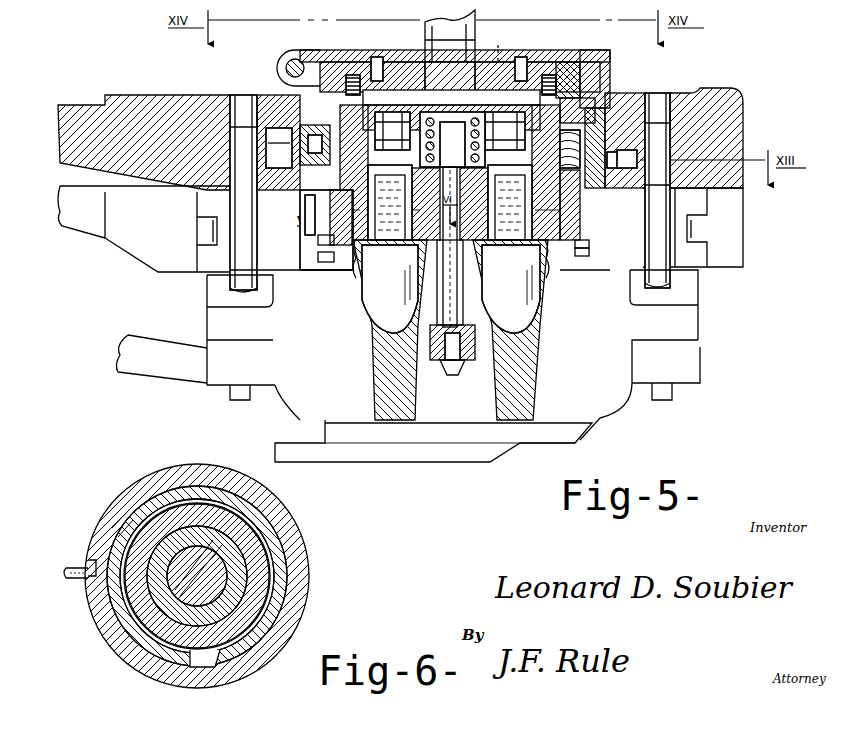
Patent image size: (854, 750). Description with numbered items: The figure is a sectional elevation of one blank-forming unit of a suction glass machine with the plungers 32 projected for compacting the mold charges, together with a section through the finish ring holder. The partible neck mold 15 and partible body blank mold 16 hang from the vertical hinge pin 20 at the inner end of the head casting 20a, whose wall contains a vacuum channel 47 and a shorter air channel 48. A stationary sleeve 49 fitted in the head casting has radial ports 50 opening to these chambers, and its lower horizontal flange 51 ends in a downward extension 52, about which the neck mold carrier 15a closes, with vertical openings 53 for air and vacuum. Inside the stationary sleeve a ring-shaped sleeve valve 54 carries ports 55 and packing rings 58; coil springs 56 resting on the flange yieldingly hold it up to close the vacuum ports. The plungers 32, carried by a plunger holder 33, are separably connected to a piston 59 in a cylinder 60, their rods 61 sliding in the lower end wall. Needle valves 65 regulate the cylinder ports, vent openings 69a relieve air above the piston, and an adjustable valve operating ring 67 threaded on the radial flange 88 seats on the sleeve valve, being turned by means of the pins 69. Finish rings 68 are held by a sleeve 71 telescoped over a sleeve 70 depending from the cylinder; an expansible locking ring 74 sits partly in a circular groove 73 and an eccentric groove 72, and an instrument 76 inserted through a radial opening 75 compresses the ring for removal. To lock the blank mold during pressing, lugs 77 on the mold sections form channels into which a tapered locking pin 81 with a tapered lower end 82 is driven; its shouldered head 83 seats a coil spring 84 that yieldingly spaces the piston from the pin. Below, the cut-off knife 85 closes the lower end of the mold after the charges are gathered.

In FIG. 5, the partible neck mold 15 is at (572, 265).
In FIG. 5, the neck mold carrier 15a is at (700, 252).
In FIG. 5, the partible body blank mold 16 is at (675, 320).
In FIG. 5, the vertical hinge pin 20 is at (144, 142).
In FIG. 5, the head casting 20a is at (745, 118).
In FIG. 5, the plungers 32 is at (450, 330).
In FIG. 5, the plunger holder 33 is at (602, 52).
In FIG. 5, the vacuum channel 47 is at (279, 154).
In FIG. 5, the air channel 48 is at (630, 168).
In FIG. 5, the stationary sleeve 49 is at (630, 102).
In FIG. 5, the radial ports 50 is at (292, 141).
In FIG. 5, the horizontal flange 51 is at (300, 196).
In FIG. 5, the downward extension 52 is at (316, 200).
In FIG. 5, the vertical openings 53 is at (320, 238).
In FIG. 5, the sleeve valve 54 is at (598, 110).
In FIG. 5, the ports 55 is at (315, 145).
In FIG. 5, the coil springs 56 is at (598, 195).
In FIG. 5, the packing rings 58 is at (300, 118).
In FIG. 5, the piston 59 is at (486, 115).
In FIG. 5, the cylinder 60 is at (400, 62).
In FIG. 5, the rods 61 is at (385, 245).
In FIG. 6, the rods 61 is at (232, 592).
In FIG. 5, the needle valves 65 is at (352, 75).
In FIG. 5, the valve operating ring 67 is at (592, 72).
In FIG. 5, the finish ring 68 is at (360, 255).
In FIG. 5, the pins 69 is at (377, 57).
In FIG. 5, the vent openings 69a is at (500, 42).
In FIG. 5, the sleeve 70 is at (366, 236).
In FIG. 6, the sleeve 70 is at (255, 560).
In FIG. 5, the sleeve 71 is at (322, 260).
In FIG. 6, the sleeve 71 is at (295, 573).
In FIG. 6, the internal eccentric groove 72 is at (120, 505).
In FIG. 5, the circular groove 73 is at (362, 225).
In FIG. 5, the expansible locking ring 74 is at (482, 225).
In FIG. 6, the expansible locking ring 74 is at (290, 526).
In FIG. 6, the radial opening 75 is at (90, 565).
In FIG. 6, the instrument 76 is at (72, 580).
In FIG. 5, the lugs 77 is at (432, 345).
In FIG. 5, the tapered locking pin 81 is at (456, 300).
In FIG. 5, the tapered lower end 82 is at (452, 370).
In FIG. 5, the shouldered head 83 is at (448, 128).
In FIG. 5, the coil spring 84 is at (417, 125).
In FIG. 5, the cut-off knife 85 is at (505, 445).
In FIG. 5, the radial flange 88 is at (568, 65).